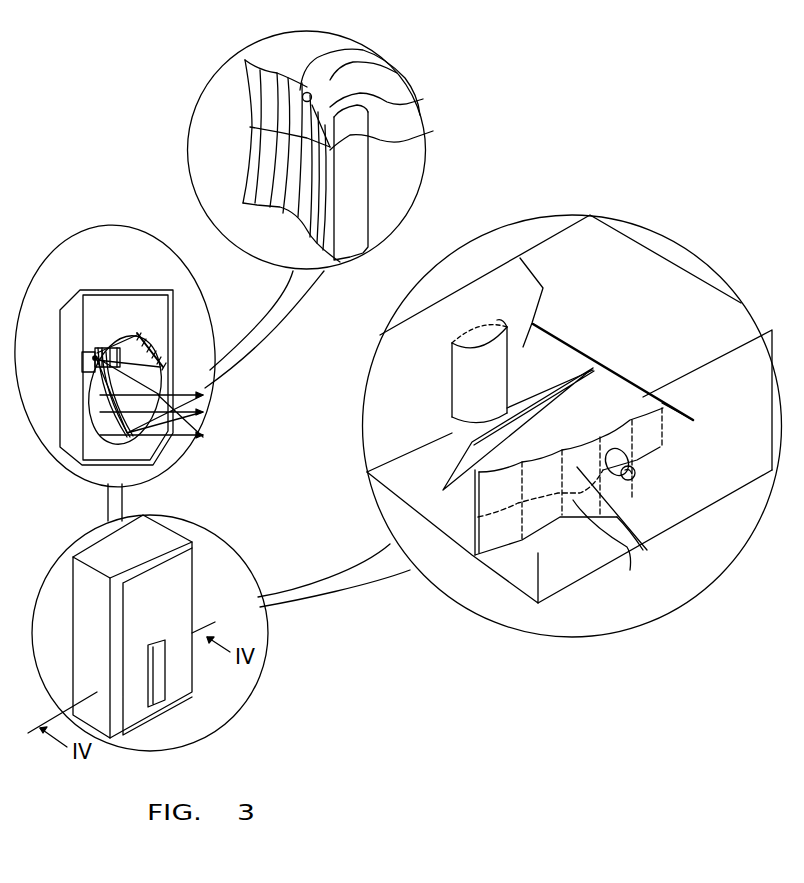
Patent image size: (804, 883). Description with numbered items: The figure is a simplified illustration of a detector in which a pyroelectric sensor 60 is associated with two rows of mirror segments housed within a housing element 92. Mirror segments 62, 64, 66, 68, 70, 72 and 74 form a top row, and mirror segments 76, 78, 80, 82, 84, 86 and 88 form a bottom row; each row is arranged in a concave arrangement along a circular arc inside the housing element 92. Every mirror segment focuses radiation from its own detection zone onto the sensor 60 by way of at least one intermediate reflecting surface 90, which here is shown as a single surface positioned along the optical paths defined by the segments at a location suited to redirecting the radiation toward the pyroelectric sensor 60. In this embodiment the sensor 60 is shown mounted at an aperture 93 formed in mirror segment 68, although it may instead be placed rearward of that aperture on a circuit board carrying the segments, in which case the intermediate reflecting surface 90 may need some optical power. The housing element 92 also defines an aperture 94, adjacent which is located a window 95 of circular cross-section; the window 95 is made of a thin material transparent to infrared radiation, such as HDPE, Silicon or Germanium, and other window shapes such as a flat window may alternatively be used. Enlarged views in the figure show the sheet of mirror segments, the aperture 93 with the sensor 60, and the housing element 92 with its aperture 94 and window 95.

The pyroelectric sensor 60 is at (82, 355).
The mirror segment 62 is at (350, 493).
The mirror segment 64 is at (667, 547).
The mirror segment 66 is at (397, 73).
The mirror segment 68 is at (330, 77).
The mirror segment 70 is at (297, 60).
The mirror segment 72 is at (275, 78).
The mirror segment 74 is at (257, 70).
The mirror segment 76 is at (340, 263).
The mirror segment 78 is at (307, 235).
The mirror segment 80 is at (302, 223).
The mirror segment 82 is at (300, 213).
The mirror segment 84 is at (263, 178).
The mirror segment 86 is at (250, 172).
The mirror segment 88 is at (250, 130).
The intermediate reflecting surface 90 is at (157, 347).
The housing element 92 is at (134, 292).
The aperture 93 is at (330, 115).
The aperture 94 is at (165, 410).
The window 95 is at (167, 637).